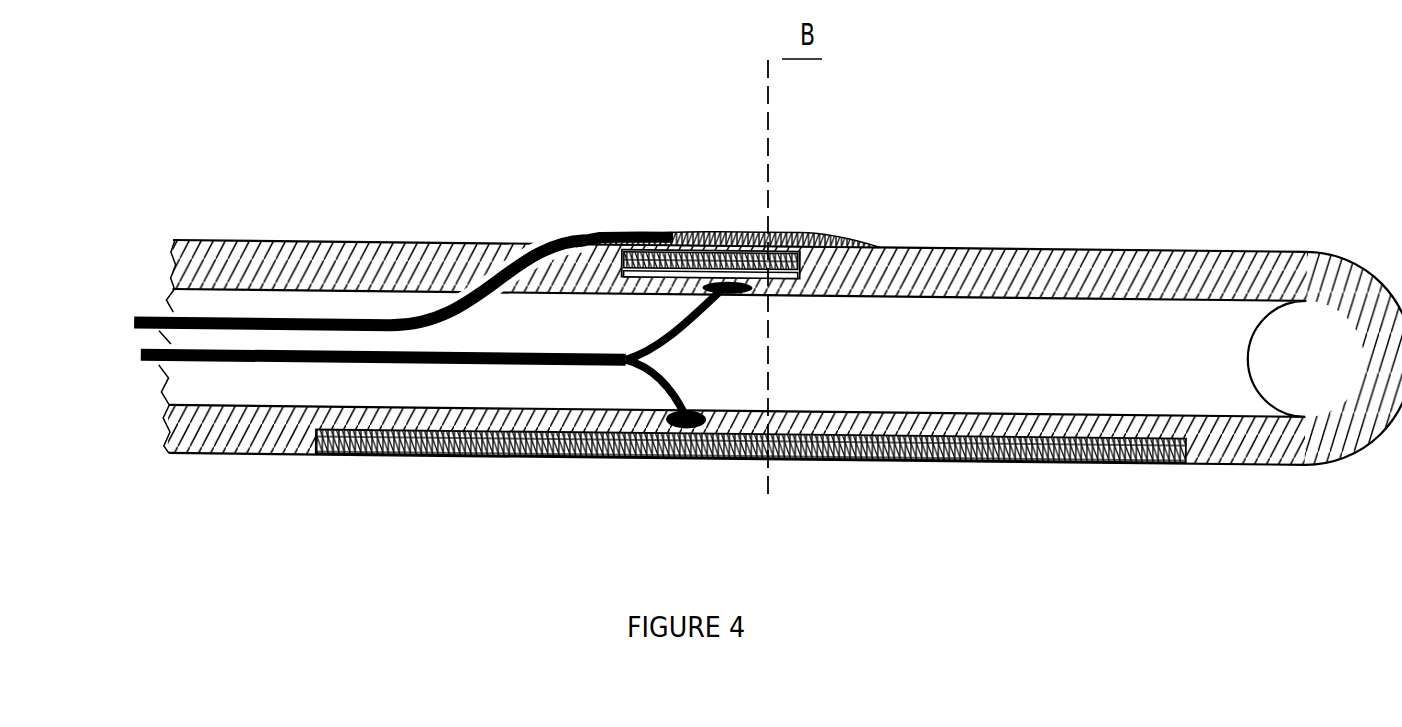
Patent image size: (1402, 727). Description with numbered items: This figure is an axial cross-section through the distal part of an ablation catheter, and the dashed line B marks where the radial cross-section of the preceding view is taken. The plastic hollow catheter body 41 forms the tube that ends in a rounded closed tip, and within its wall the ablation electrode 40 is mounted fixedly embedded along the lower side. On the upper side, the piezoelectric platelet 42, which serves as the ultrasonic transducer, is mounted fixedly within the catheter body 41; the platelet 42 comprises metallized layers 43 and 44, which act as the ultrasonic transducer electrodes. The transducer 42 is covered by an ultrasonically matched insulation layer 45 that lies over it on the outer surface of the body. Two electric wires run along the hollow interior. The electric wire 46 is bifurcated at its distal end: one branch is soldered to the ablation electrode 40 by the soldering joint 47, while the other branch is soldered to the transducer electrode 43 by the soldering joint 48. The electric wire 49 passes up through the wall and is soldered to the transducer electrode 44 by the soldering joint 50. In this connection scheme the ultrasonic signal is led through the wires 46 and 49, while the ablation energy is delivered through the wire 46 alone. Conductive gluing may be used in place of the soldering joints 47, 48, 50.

The ablation electrode 40 is at (751, 496).
The plastic hollow catheter body 41 is at (780, 395).
The piezoelectric platelet 42 is at (785, 202).
The metallized layer 43 is at (805, 276).
The metallized layer 44 is at (756, 192).
The ultrasonically matched insulation layer 45 is at (726, 133).
The electric wire 46 is at (396, 378).
The soldering joint 47 is at (581, 477).
The soldering joint 48 is at (817, 433).
The electric wire 49 is at (331, 241).
The soldering joint 50 is at (609, 143).